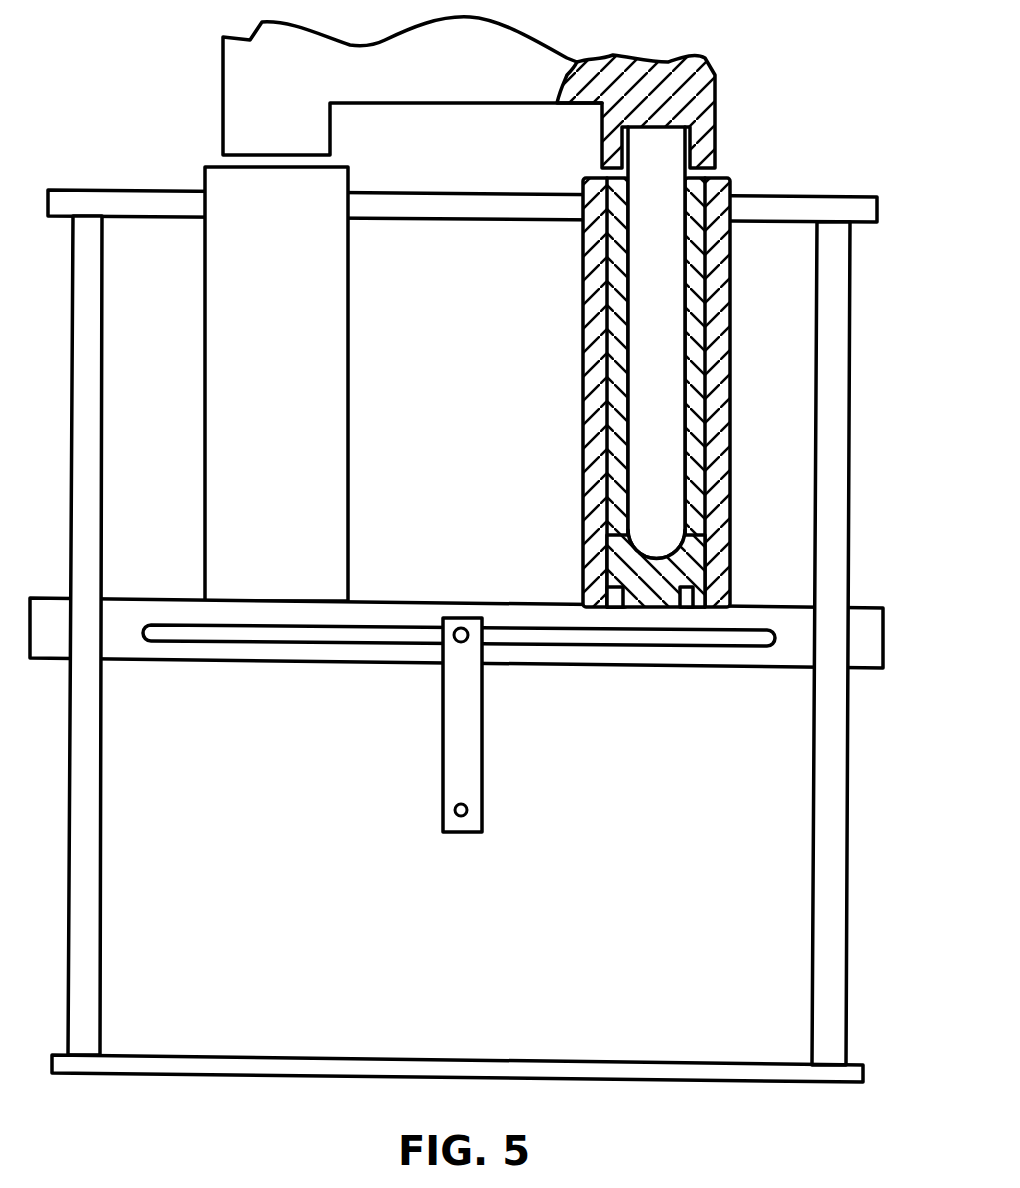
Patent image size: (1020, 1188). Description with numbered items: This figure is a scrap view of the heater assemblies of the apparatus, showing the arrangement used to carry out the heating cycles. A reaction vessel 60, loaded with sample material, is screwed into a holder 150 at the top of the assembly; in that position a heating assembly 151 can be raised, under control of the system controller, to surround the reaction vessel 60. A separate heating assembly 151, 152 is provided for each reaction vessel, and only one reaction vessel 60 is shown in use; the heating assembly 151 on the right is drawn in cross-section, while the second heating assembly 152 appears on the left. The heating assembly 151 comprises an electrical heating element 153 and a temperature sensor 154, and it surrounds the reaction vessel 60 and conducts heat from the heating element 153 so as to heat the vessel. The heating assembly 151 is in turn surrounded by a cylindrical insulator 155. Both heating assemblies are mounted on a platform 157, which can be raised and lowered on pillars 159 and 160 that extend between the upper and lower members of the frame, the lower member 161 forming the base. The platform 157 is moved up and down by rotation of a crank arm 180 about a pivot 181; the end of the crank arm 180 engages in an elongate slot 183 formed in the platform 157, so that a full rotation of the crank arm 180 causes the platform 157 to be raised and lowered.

The reaction vessel 60 is at (662, 367).
The holder 150 is at (697, 100).
The heating assembly 151 is at (693, 278).
The heating assembly 152 is at (317, 331).
The electrical heating element 153 is at (602, 552).
The temperature sensor 154 is at (693, 597).
The cylindrical insulator 155 is at (715, 330).
The platform 157 is at (550, 620).
The pillar 159 is at (833, 796).
The pillar 160 is at (85, 800).
The base plate 161 is at (698, 1068).
The crank arm 180 is at (467, 766).
The pivot 181 is at (456, 818).
The elongate slot 183 is at (152, 642).